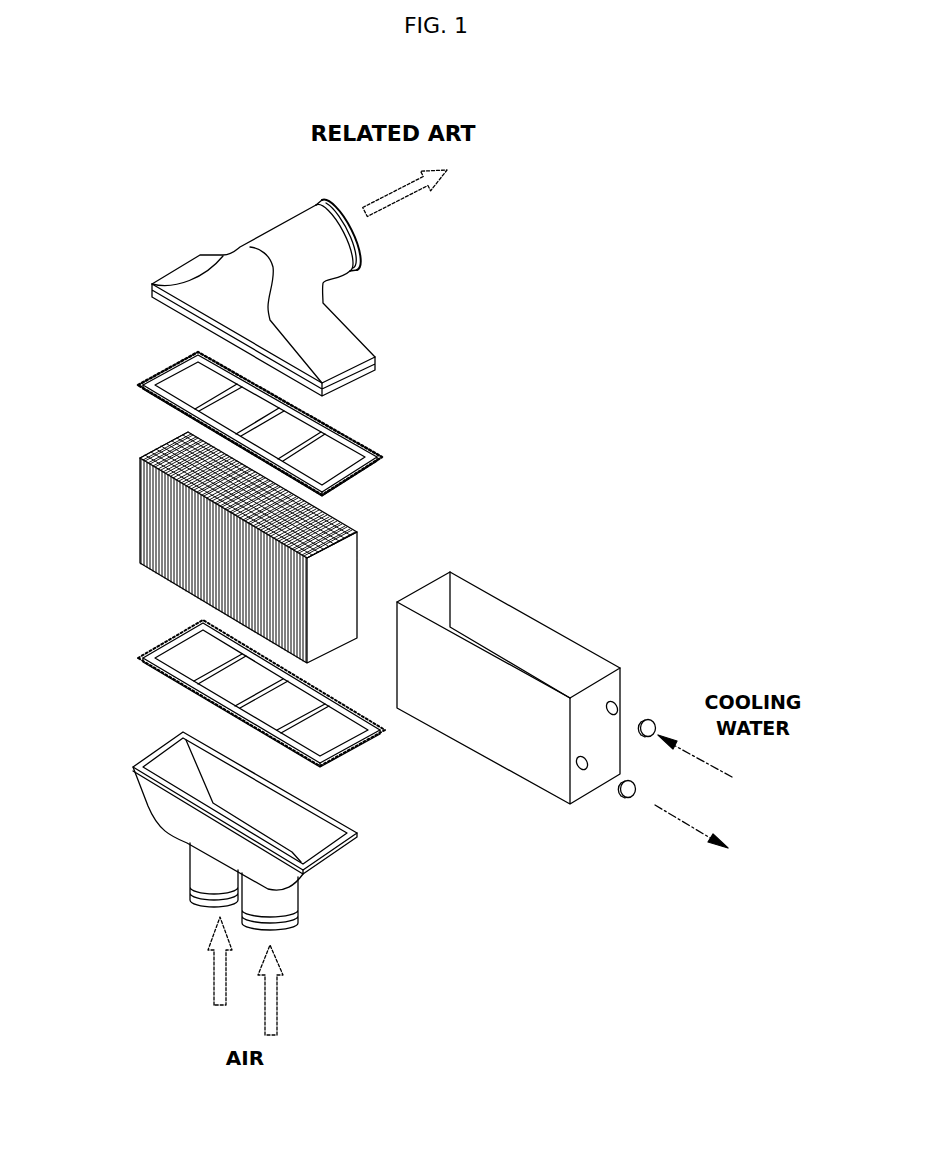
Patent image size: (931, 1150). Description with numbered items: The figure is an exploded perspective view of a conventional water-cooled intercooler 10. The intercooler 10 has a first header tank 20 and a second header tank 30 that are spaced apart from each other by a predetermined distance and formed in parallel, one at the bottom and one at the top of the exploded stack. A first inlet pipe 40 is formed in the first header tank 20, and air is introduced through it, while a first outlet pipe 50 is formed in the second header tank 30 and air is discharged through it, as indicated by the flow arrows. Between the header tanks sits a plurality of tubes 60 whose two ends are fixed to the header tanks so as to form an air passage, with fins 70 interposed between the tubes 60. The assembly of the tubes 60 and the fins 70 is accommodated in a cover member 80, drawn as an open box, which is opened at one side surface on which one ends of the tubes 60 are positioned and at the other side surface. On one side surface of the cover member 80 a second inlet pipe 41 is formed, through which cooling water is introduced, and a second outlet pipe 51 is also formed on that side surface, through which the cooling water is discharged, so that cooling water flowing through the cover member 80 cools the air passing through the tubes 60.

The water-cooled intercooler 10 is at (512, 294).
The first header tank 20 is at (160, 752).
The second header tank 30 is at (168, 362).
The first inlet pipe 40 is at (190, 870).
The second inlet pipe 41 is at (645, 718).
The first outlet pipe 50 is at (363, 235).
The second outlet pipe 51 is at (620, 800).
The tubes 60 is at (138, 462).
The fins 70 is at (132, 490).
The cover member 80 is at (537, 630).